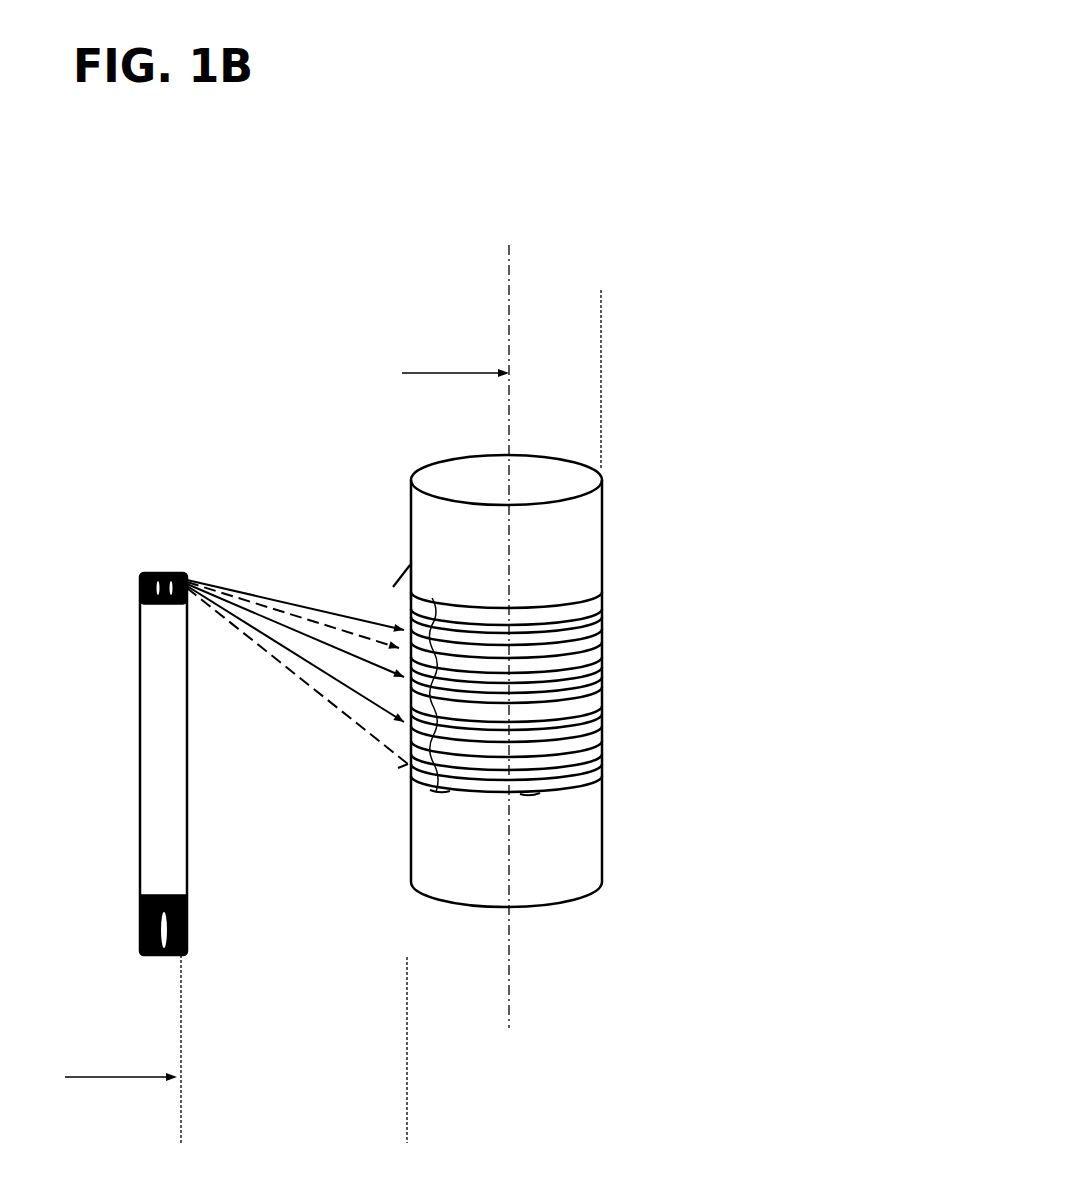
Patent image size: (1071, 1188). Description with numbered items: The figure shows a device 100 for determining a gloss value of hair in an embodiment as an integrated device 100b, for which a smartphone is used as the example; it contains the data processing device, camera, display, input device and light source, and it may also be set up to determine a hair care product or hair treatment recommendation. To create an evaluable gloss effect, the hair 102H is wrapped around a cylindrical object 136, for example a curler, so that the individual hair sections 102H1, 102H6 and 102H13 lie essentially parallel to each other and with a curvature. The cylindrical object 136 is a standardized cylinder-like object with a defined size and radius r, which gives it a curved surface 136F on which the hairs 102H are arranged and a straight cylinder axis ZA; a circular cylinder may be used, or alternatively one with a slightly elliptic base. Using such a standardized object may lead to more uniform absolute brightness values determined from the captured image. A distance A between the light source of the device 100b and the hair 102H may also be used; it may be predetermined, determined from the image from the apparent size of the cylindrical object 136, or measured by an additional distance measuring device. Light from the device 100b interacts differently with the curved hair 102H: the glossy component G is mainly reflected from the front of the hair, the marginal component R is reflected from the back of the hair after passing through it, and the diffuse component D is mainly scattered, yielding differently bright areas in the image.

The device for determining a gloss value of hair 100 is at (235, 644).
The integrated device 100b is at (130, 518).
The cylindrical object 136 is at (412, 478).
The curved surface 136F is at (410, 562).
The hair 102H is at (826, 680).
The hair section 102H1 is at (602, 822).
The hair section 102H6 is at (602, 755).
The hair section 102H13 is at (602, 665).
The cylinder axis ZA is at (508, 300).
The radius r is at (603, 373).
The glossy light component G is at (409, 766).
The marginal light component R is at (440, 793).
The diffuse light component D is at (530, 793).
The distance A is at (408, 1077).